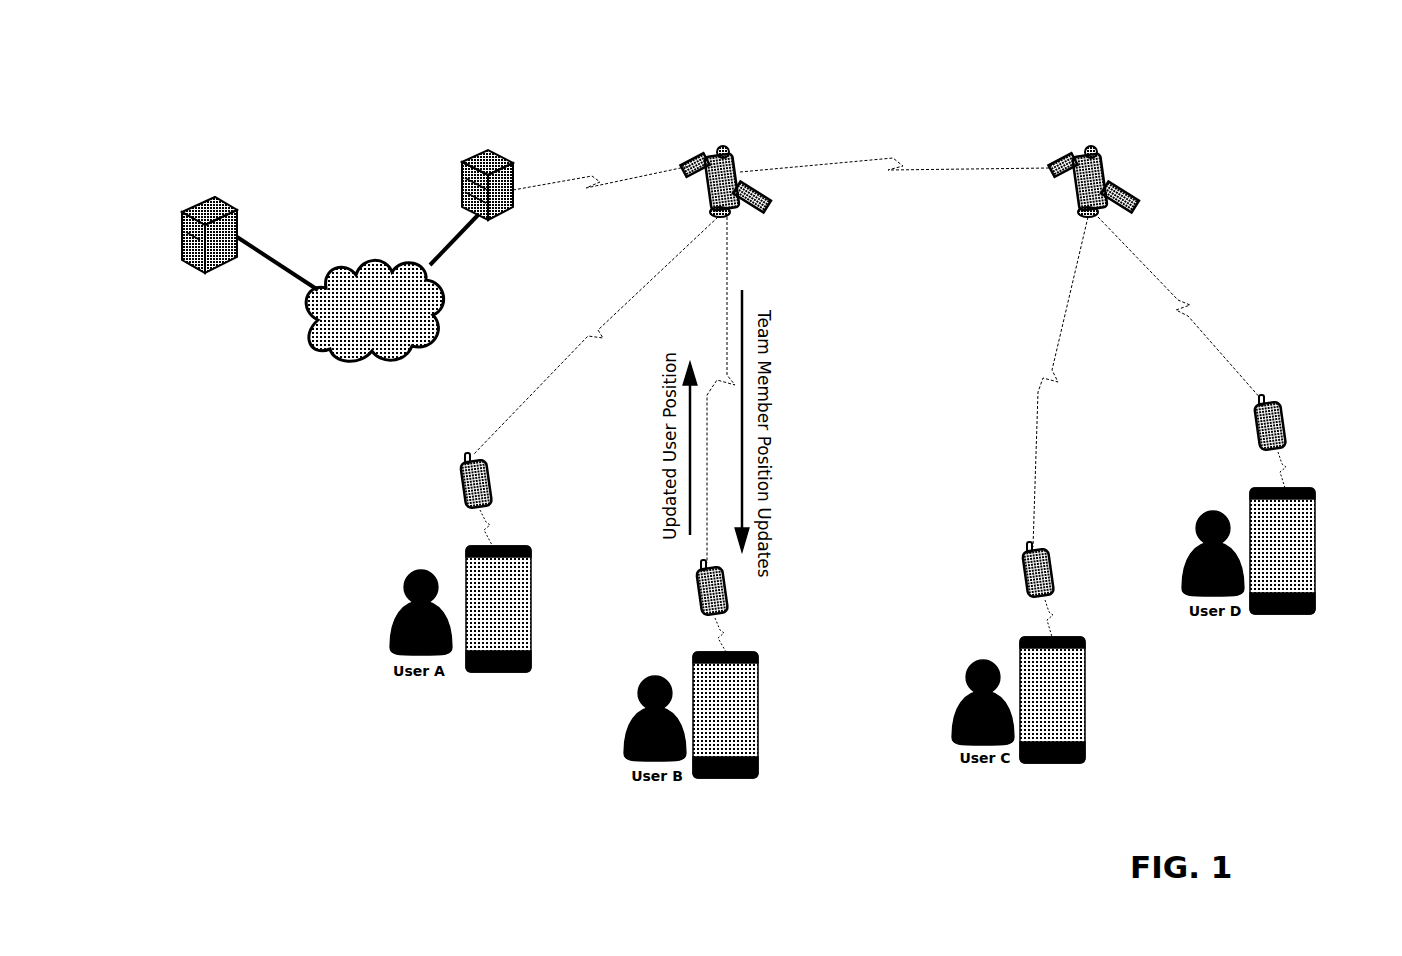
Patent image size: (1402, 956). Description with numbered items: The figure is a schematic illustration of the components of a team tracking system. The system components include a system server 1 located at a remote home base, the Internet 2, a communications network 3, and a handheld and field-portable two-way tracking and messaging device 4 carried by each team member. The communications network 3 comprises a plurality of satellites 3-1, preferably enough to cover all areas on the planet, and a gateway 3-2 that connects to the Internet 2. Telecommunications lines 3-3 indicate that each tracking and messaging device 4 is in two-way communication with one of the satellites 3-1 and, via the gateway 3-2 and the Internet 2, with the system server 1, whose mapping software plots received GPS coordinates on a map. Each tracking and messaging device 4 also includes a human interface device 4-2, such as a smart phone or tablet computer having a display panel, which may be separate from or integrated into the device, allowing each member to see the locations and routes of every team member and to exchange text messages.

The system server 1 is at (228, 200).
The Internet 2 is at (325, 342).
The communications network 3 is at (858, 122).
The satellites 3-1 is at (1110, 190).
The gateway 3-2 is at (490, 157).
The telecommunications lines 3-3 is at (1180, 303).
The two-way tracking and messaging device 4 is at (475, 482).
The human interface device 4-2 is at (483, 645).